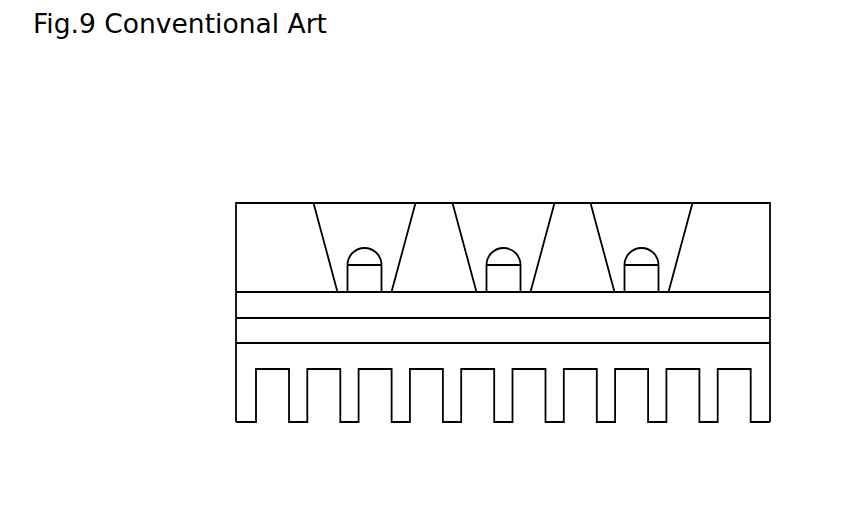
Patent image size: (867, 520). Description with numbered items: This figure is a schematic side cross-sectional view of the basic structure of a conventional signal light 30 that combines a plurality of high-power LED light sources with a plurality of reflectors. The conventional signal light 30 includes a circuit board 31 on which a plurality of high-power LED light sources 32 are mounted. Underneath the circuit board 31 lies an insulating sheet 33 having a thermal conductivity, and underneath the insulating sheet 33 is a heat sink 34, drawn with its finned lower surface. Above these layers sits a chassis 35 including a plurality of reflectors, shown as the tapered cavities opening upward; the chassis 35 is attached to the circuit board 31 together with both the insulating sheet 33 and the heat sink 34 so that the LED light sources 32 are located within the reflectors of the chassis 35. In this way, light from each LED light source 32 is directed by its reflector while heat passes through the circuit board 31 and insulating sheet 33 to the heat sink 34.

The conventional signal light 30 is at (503, 190).
The circuit board 31 is at (253, 301).
The high-power LED light sources 32 is at (365, 252).
The insulating sheet 33 is at (250, 327).
The heat sink 34 is at (263, 357).
The chassis 35 is at (287, 240).